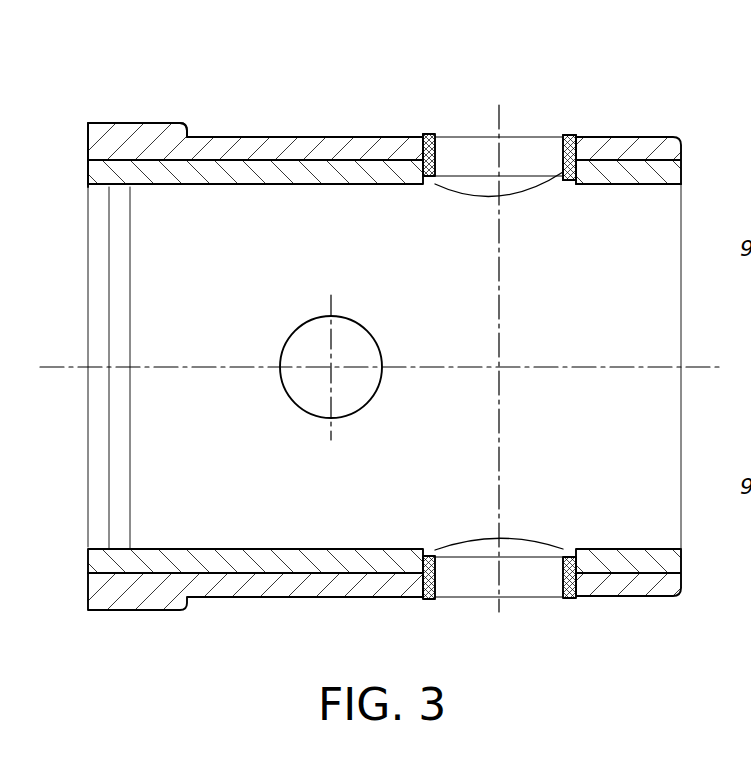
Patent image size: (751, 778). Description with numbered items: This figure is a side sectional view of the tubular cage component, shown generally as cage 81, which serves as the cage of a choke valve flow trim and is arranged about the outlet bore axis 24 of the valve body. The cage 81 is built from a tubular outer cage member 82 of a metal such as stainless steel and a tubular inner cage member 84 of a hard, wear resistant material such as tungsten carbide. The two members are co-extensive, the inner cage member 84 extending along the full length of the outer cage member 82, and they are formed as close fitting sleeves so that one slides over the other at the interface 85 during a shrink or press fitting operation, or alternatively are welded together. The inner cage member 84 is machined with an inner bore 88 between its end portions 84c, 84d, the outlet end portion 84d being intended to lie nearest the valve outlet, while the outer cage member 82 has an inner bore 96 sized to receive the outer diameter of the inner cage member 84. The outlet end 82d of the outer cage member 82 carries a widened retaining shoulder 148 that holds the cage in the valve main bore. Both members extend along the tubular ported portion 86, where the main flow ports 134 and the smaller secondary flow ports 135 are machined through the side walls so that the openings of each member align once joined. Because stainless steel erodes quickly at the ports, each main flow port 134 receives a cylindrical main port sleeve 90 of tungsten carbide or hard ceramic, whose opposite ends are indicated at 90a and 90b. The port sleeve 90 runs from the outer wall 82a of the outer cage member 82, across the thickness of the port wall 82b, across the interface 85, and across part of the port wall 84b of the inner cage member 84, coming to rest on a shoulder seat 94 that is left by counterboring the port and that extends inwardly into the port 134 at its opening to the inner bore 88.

The outlet bore axis 24 is at (695, 367).
The cage 81 is at (358, 107).
The tubular outer cage member 82 is at (143, 603).
The outer wall of the outer cage member 82a is at (285, 137).
The port wall of the outer cage member 82b is at (422, 148).
The outlet end of the outer cage member 82d is at (88, 146).
The tubular inner cage member 84 is at (188, 558).
The port wall of the inner cage member 84b is at (562, 168).
The end portion of the inner cage member 84c is at (657, 187).
The outlet end portion of the inner cage member 84d is at (88, 180).
The interface 85 is at (682, 160).
The tubular ported portion 86 is at (263, 587).
The inner bore 88 is at (243, 187).
The main port sleeve 90 is at (571, 152).
The outer face of seal ring 90a is at (571, 135).
The inner face of seal ring 90b is at (572, 178).
The shoulder seat 94 is at (430, 185).
The inner bore of the outer cage member 96 is at (270, 570).
The main flow port 134 is at (470, 193).
The secondary flow port 135 is at (307, 345).
The widened retaining shoulder 148 is at (187, 132).